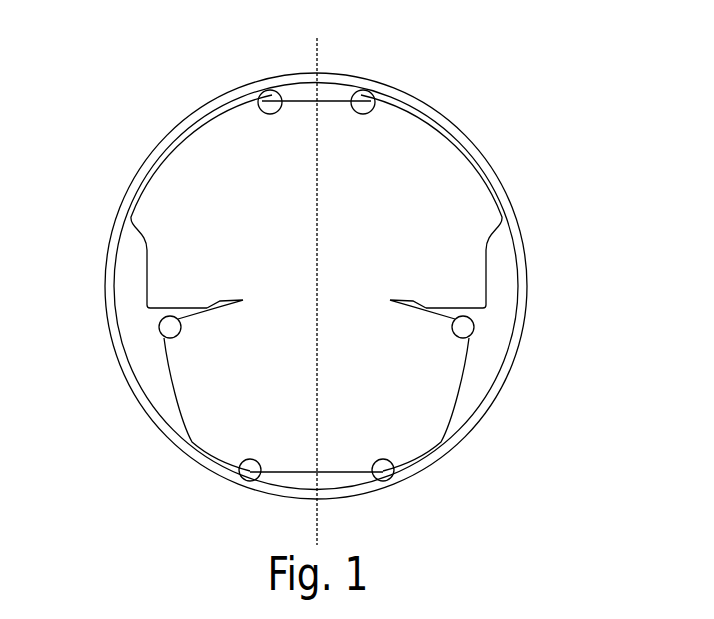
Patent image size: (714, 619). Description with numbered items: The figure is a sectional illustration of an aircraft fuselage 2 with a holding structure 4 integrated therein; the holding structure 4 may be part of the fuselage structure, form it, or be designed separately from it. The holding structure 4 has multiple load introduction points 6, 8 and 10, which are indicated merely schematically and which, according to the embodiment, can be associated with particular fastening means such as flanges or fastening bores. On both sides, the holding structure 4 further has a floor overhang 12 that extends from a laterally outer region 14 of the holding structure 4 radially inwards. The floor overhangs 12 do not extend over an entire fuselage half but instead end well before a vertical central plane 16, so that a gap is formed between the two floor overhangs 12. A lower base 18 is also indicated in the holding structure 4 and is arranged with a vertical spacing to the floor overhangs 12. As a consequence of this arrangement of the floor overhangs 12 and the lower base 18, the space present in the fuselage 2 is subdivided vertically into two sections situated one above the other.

The aircraft fuselage 2 is at (316, 271).
The holding structure 4 is at (500, 183).
The load introduction point 6 is at (265, 92).
The load introduction point 8 is at (160, 331).
The load introduction point 10 is at (245, 481).
The floor overhang 12 is at (316, 270).
The laterally outer region 14 is at (512, 289).
The vertical central plane 16 is at (322, 50).
The lower base 18 is at (316, 426).